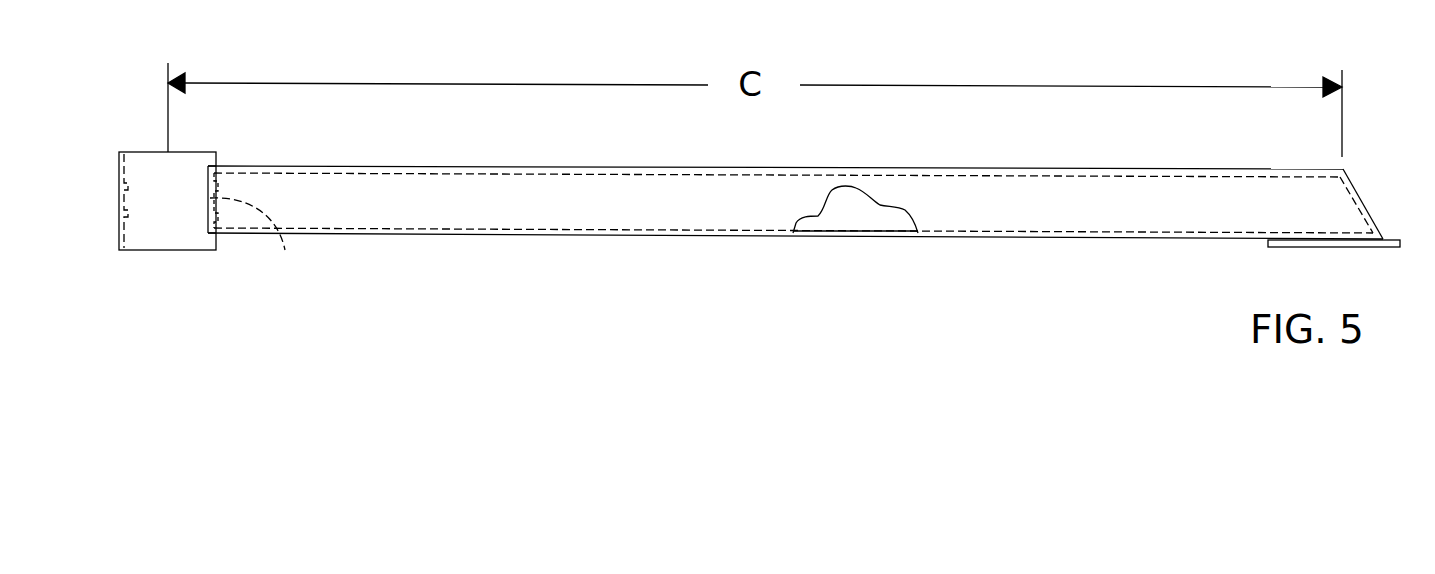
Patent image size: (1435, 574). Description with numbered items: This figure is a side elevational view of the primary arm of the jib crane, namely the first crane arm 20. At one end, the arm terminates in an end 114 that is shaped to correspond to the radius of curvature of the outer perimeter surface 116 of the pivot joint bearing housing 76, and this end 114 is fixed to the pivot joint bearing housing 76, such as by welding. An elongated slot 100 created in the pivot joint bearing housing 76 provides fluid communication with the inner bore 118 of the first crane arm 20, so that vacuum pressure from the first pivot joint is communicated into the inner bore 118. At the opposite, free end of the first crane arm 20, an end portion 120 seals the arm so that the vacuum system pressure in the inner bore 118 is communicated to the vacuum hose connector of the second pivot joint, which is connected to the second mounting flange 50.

The first crane arm 20 is at (777, 168).
The pivot joint bearing housing 76 is at (118, 235).
The outer perimeter surface 116 is at (222, 162).
The end 114 is at (202, 233).
The elongated slot 100 is at (285, 250).
The inner bore 118 is at (850, 212).
The end portion 120 is at (1357, 188).
The second mounting flange 50 is at (1400, 243).